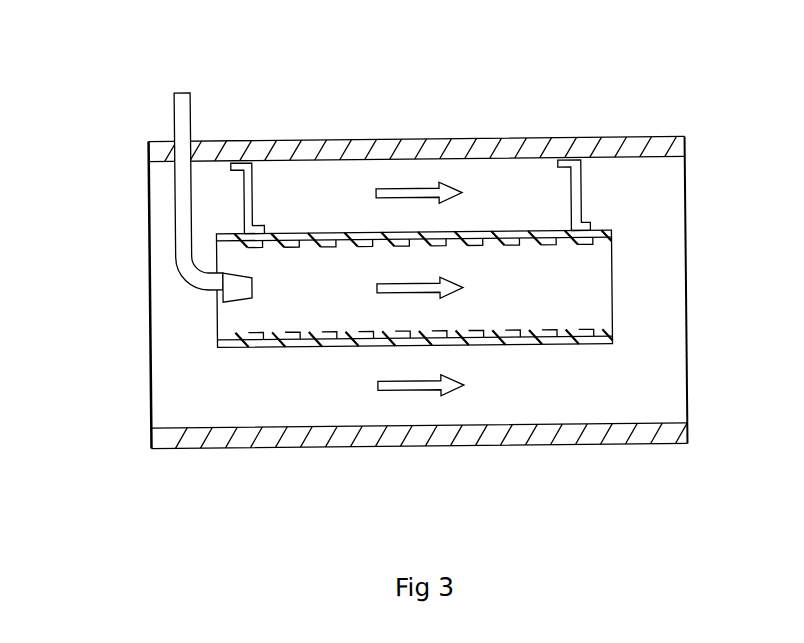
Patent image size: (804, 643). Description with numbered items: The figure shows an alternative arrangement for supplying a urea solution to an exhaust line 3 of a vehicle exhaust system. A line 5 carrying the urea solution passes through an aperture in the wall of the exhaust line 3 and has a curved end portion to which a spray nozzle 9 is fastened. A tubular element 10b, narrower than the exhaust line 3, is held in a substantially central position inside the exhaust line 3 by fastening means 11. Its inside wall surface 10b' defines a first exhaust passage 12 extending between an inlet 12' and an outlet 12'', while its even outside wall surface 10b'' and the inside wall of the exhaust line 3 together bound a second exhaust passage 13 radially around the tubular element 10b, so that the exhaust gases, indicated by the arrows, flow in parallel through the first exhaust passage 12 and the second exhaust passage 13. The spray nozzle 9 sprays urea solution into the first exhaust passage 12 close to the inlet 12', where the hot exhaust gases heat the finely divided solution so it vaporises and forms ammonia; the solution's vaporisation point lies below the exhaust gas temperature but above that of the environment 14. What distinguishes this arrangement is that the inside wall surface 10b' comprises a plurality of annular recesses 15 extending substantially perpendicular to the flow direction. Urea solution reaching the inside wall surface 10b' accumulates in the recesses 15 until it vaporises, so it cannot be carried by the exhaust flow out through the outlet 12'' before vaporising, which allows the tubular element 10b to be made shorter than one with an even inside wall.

The exhaust line 3 is at (167, 436).
The line 5 is at (185, 113).
The spray nozzle 9 is at (235, 285).
The tubular element 10b is at (616, 370).
The inside wall surface 10b' is at (630, 301).
The outside wall surface 10b'' is at (532, 372).
The fastening means 11 is at (250, 183).
The first exhaust passage 12 is at (414, 289).
The inlet 12' is at (145, 358).
The outlet 12'' is at (641, 224).
The second exhaust passage 13 is at (353, 391).
The environment 14 is at (432, 32).
The annular recesses 15 is at (327, 342).